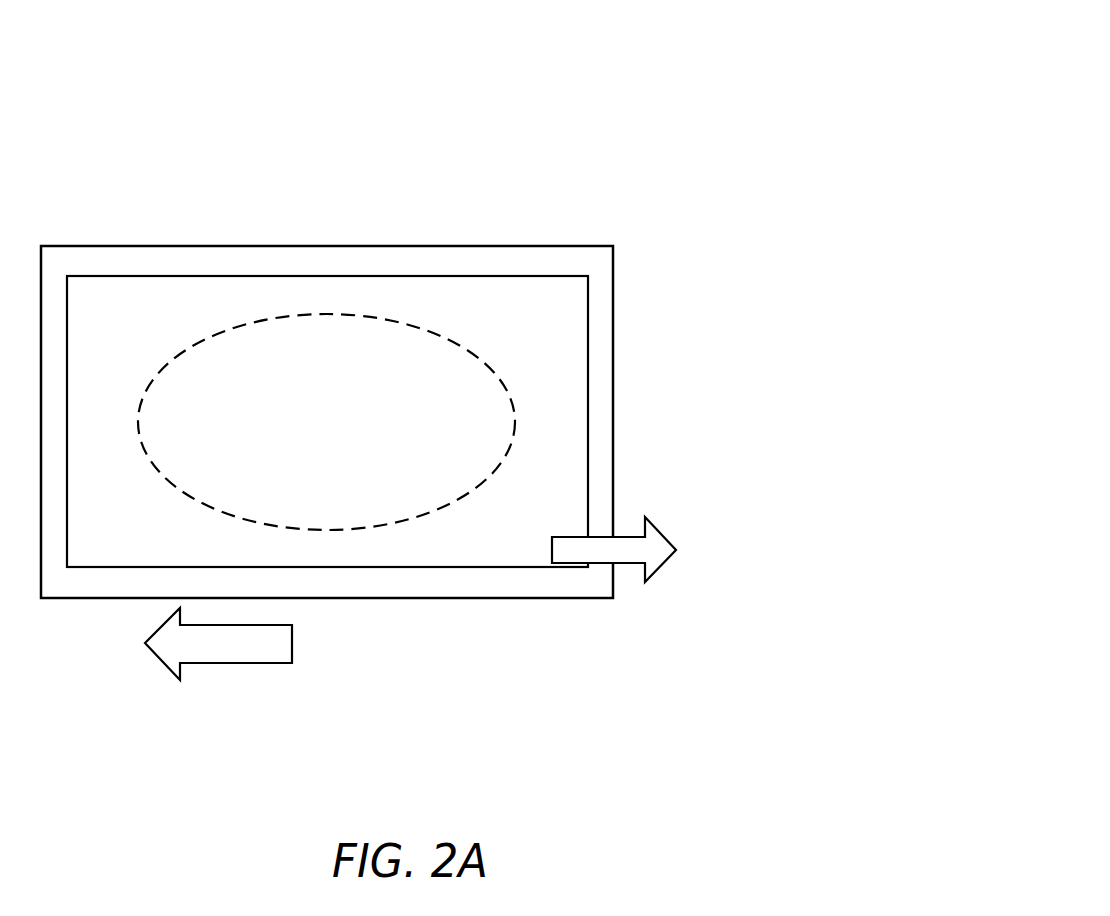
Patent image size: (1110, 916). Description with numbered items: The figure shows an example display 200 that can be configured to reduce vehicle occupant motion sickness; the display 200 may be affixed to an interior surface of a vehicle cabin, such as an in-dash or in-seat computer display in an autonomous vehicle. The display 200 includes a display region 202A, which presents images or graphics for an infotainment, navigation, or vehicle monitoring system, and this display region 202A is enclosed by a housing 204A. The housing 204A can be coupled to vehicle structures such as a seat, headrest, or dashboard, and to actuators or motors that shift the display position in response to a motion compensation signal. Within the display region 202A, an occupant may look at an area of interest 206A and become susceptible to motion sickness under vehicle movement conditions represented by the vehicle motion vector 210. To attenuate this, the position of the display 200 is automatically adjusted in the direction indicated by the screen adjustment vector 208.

The display 200 is at (673, 58).
The display region 202A is at (528, 275).
The housing 204A is at (613, 365).
The area of interest 206A is at (333, 337).
The screen adjustment vector 208 is at (663, 568).
The vehicle motion vector 210 is at (158, 627).